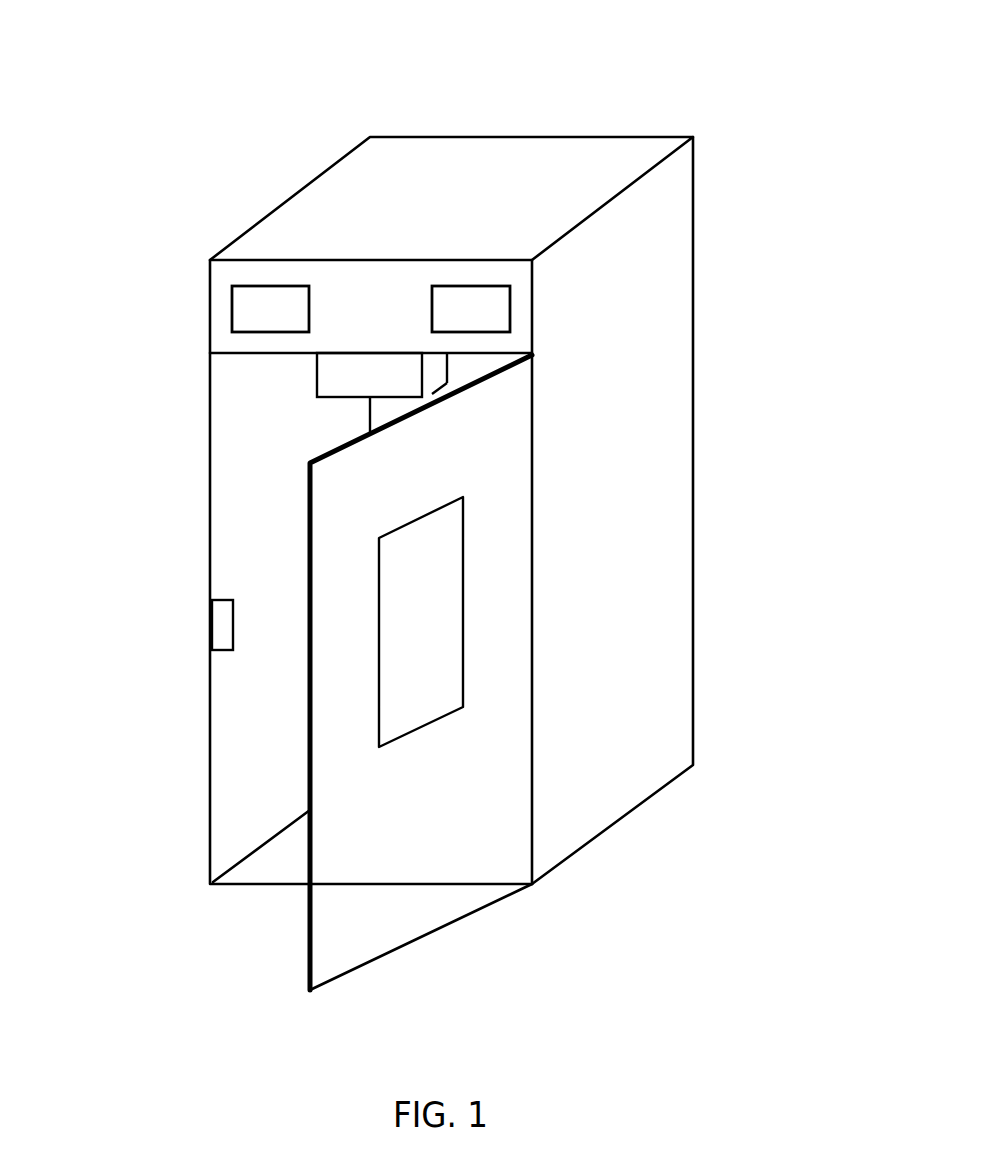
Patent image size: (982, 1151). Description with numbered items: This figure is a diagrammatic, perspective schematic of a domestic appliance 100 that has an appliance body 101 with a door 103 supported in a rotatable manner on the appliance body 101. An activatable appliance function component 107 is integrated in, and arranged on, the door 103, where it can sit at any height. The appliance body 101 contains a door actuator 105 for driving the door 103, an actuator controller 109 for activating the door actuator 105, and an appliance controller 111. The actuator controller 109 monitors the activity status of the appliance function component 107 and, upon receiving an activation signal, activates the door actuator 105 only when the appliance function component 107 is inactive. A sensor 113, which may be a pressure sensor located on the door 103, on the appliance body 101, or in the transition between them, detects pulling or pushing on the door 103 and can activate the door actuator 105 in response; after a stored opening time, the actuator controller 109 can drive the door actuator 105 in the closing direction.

The domestic appliance 100 is at (320, 125).
The appliance body 101 is at (652, 260).
The door 103 is at (478, 458).
The door actuator 105 is at (317, 378).
The appliance function component 107 is at (423, 643).
The actuator controller 109 is at (232, 308).
The appliance controller 111 is at (510, 306).
The sensor 113 is at (212, 621).